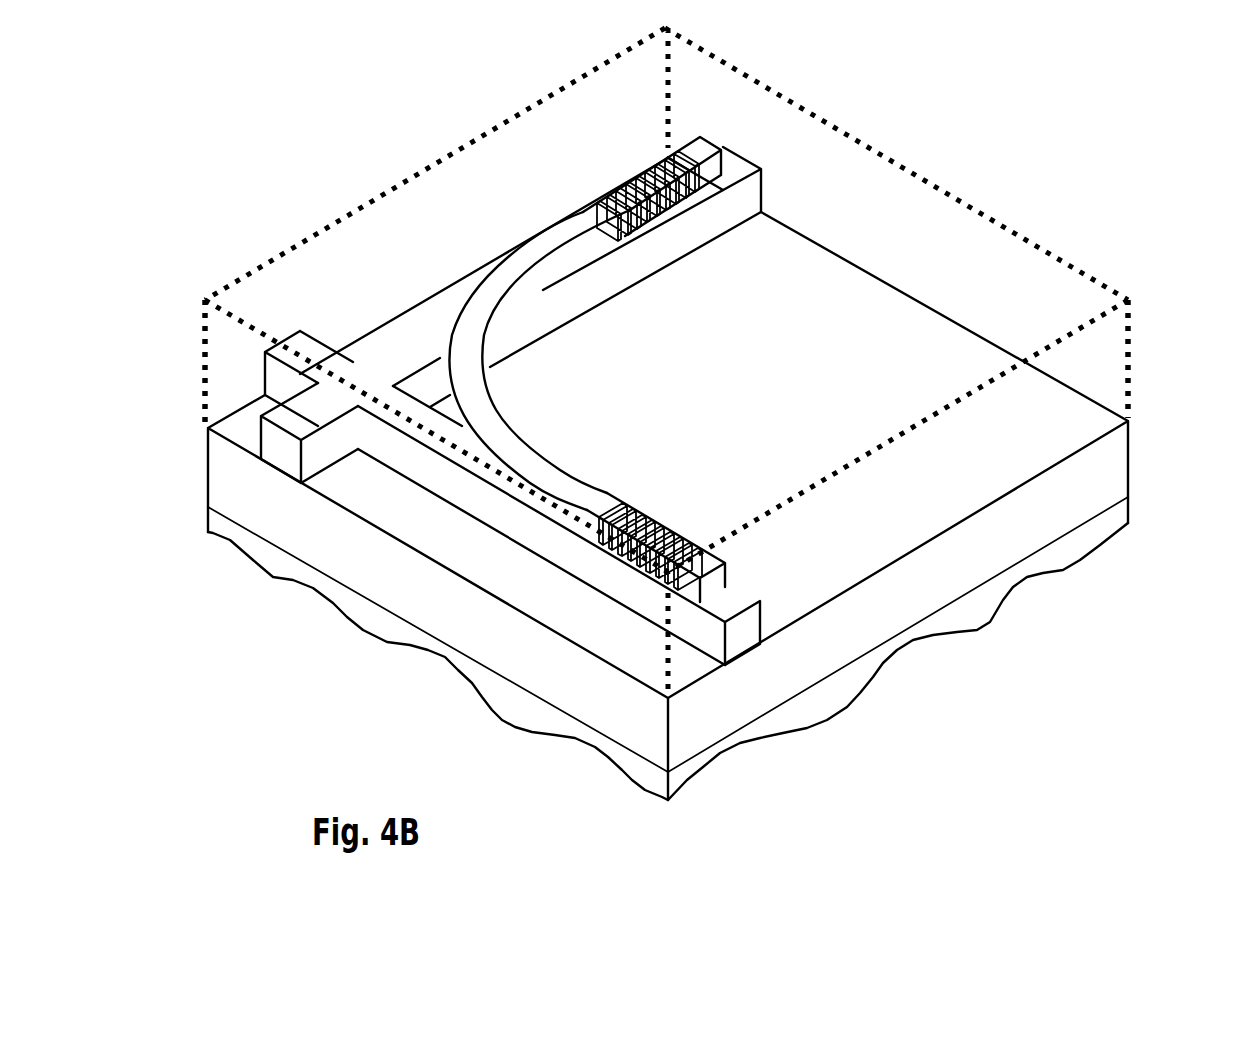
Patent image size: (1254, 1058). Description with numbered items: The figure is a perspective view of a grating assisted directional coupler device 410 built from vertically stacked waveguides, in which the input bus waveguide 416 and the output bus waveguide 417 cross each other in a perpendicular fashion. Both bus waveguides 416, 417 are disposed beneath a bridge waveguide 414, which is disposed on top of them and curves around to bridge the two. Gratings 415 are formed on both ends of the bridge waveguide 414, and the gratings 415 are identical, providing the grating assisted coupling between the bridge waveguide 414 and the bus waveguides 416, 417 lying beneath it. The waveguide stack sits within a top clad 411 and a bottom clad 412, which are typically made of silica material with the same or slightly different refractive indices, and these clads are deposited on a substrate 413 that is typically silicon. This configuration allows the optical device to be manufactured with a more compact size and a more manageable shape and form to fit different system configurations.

The optical waveguide device 410 is at (1007, 128).
The top clad 411 is at (375, 268).
The bottom clad 412 is at (233, 483).
The substrate 413 is at (365, 617).
The bridge waveguide 414 is at (500, 427).
The gratings 415 is at (662, 187).
The input bus waveguide 416 is at (632, 262).
The output bus waveguide 417 is at (740, 627).